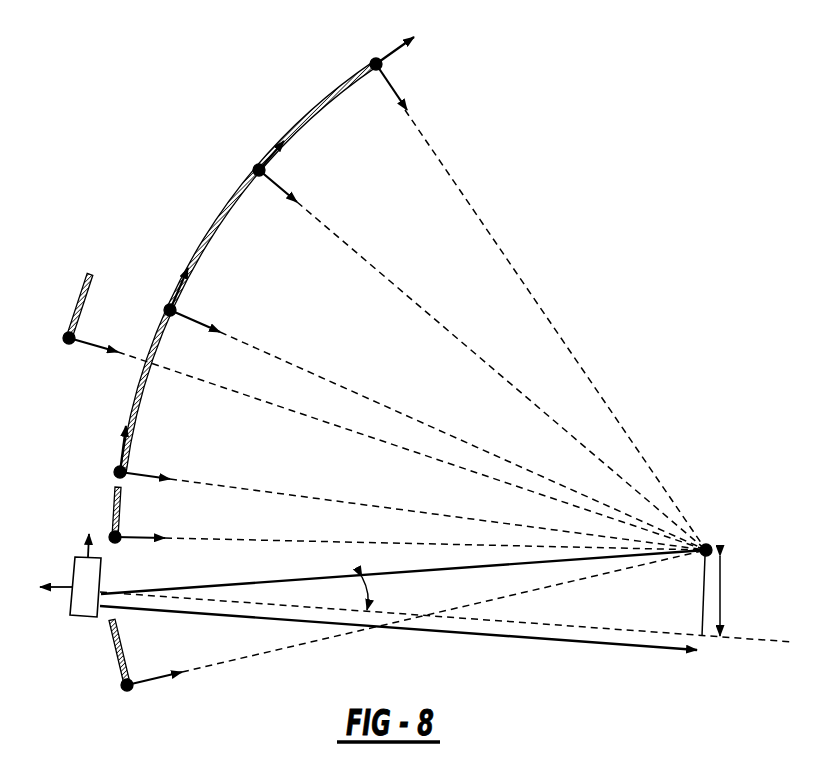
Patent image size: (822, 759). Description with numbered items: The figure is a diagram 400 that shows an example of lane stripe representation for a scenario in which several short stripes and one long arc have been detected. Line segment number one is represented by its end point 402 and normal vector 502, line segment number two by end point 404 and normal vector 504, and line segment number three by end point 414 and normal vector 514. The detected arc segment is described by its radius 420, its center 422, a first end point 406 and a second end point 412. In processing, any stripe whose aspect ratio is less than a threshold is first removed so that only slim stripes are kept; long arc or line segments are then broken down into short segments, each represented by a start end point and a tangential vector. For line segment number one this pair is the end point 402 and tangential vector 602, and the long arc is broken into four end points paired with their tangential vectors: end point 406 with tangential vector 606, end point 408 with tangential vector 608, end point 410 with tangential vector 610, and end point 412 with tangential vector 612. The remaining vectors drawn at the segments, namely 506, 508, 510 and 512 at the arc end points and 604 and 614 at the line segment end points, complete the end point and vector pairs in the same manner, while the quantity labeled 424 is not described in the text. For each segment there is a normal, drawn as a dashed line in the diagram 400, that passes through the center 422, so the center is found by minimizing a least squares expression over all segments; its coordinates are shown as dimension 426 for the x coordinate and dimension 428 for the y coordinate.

The diagram 400 is at (109, 125).
The end point 402 is at (125, 692).
The end point 404 is at (118, 545).
The first end point 406 is at (113, 473).
The end point 408 is at (172, 318).
The end point 410 is at (262, 180).
The second end point 412 is at (374, 72).
The end point 414 is at (61, 340).
The radius 420 is at (544, 311).
The center 422 is at (712, 548).
The angle 424 is at (383, 593).
The dimension 426 is at (737, 596).
The dimension 428 is at (398, 633).
The normal vector 502 is at (152, 681).
The normal vector 504 is at (145, 534).
The orientation vector at third position 506 is at (147, 475).
The orientation vector at fourth position 508 is at (195, 317).
The orientation vector at fifth position 510 is at (280, 188).
The orientation vector at sixth position 512 is at (394, 82).
The normal vector 514 is at (89, 348).
The tangential vector 602 is at (120, 667).
The tangent segment at second position 604 is at (113, 517).
The tangential vector 606 is at (121, 444).
The tangential vector 608 is at (181, 276).
The tangential vector 610 is at (272, 150).
The tangential vector 612 is at (392, 56).
The tangent segment at offset position 614 is at (78, 315).